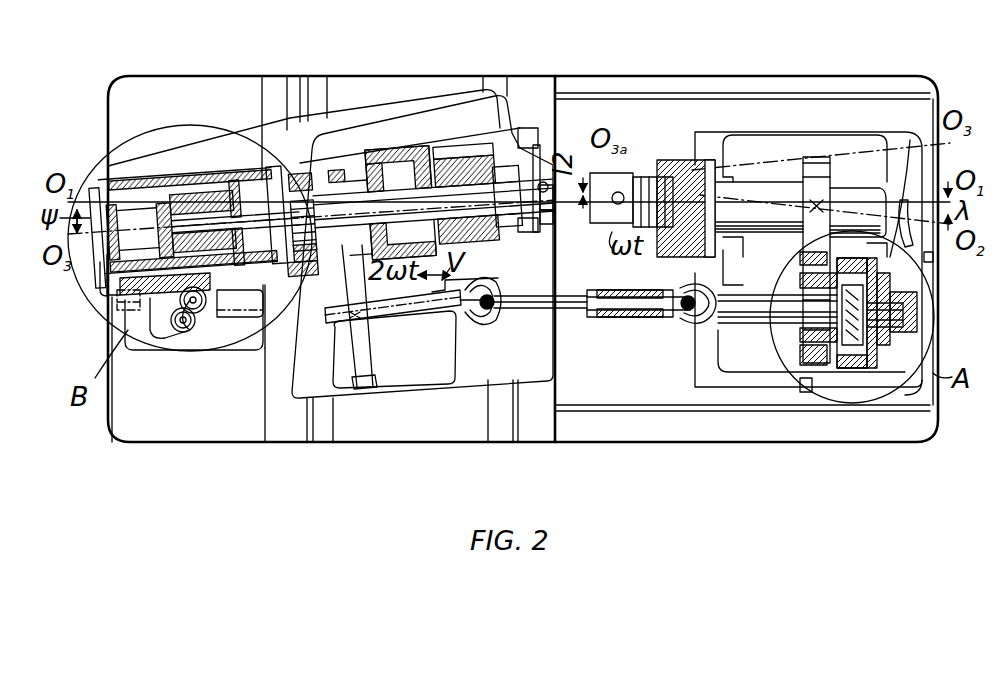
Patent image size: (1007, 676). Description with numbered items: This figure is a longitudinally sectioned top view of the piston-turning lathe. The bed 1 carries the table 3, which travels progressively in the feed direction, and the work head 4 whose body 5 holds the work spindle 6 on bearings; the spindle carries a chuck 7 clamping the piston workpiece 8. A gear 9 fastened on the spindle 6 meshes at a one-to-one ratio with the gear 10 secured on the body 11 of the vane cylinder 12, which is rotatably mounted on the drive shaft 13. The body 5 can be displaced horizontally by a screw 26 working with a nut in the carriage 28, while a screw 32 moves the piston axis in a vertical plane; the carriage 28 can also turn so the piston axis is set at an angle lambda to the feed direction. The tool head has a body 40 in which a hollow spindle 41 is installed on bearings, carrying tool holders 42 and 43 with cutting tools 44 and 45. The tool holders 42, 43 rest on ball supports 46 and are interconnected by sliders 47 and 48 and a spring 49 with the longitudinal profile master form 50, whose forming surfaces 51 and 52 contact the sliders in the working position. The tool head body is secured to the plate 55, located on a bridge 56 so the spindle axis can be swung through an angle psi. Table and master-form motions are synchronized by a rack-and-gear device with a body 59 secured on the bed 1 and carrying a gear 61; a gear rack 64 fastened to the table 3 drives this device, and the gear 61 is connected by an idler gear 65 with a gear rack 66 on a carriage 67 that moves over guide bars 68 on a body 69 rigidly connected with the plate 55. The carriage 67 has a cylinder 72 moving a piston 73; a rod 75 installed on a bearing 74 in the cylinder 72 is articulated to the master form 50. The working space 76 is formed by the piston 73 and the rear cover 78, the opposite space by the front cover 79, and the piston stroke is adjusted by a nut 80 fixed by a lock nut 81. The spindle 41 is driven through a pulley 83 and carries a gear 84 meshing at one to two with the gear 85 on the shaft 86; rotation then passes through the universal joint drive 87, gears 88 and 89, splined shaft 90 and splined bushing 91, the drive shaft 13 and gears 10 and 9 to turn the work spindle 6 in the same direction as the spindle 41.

The bed 1 is at (851, 420).
The table 3 is at (928, 392).
The work head 4 is at (870, 132).
The body 5 is at (758, 132).
The work spindle 6 is at (780, 192).
The chuck 7 is at (687, 156).
The piston 8 is at (618, 182).
The gear 9 is at (820, 175).
The gear 10 is at (800, 328).
The body of the vane cylinder 11 is at (857, 368).
The vane cylinder 12 is at (900, 360).
The drive shaft 13 is at (753, 312).
The screw 26 is at (806, 392).
The carriage 28 is at (887, 180).
The screw 32 is at (940, 260).
The body 40 is at (430, 123).
The hollow spindle 41 is at (398, 213).
The tool holder 42 is at (508, 243).
The tool holder 43 is at (520, 148).
The cutting tool 44 is at (553, 220).
The cutting tool 45 is at (548, 185).
The ball supports 46 is at (540, 128).
The slider 47 is at (462, 138).
The slider 48 is at (452, 185).
The spring 49 is at (498, 197).
The longitudinal profile master form 50 is at (360, 201).
The forming surface 51 is at (378, 205).
The forming surface 52 is at (460, 285).
The plate 55 is at (283, 125).
The bridge 56 is at (270, 92).
The body 59 is at (155, 335).
The gear 61 is at (188, 332).
The gear rack 64 is at (232, 318).
The idler gear 65 is at (202, 313).
The gear rack 66 is at (147, 282).
The carriage 67 is at (122, 184).
The guide bars 68 is at (250, 180).
The body 69 is at (97, 190).
The cylinder 72 is at (106, 262).
The piston 73 is at (202, 202).
The bearing 74 is at (184, 202).
The rod 75 is at (300, 270).
The working space 76 is at (160, 214).
The rear cover 78 is at (140, 228).
The front cover 79 is at (290, 292).
The nut 80 is at (232, 192).
The lock nut 81 is at (212, 200).
The pulley 83 is at (318, 310).
The gear 84 is at (342, 184).
The gear 85 is at (372, 368).
The shaft 86 is at (398, 312).
The universal joint drive 87 is at (613, 322).
The gear 88 is at (482, 320).
The gear 89 is at (687, 330).
The splined shaft 90 is at (560, 308).
The splined bushing 91 is at (640, 315).